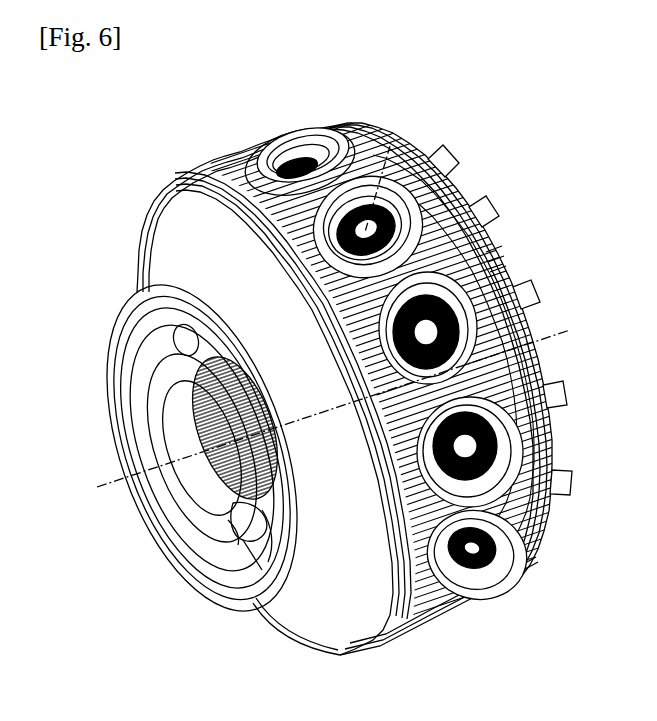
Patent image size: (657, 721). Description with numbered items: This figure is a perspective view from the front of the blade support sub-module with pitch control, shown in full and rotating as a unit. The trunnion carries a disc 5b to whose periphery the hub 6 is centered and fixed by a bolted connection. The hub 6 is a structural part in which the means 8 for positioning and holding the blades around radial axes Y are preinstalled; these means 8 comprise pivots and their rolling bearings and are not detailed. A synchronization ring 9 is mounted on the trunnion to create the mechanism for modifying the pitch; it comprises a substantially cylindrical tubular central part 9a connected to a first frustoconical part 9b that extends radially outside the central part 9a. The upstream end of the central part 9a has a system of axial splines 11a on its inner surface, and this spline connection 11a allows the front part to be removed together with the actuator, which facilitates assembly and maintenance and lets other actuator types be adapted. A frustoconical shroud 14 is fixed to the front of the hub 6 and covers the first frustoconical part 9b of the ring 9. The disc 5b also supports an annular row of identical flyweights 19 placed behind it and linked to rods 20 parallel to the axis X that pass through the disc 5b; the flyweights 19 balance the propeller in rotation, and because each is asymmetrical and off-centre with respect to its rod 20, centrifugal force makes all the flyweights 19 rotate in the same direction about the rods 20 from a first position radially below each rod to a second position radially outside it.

The frustoconical shroud 14 is at (190, 253).
The axial splines 11a is at (217, 421).
The synchronization ring 9 is at (90, 572).
The central part 9a is at (263, 512).
The first frustoconical part 9b is at (230, 525).
The disc 5b is at (440, 200).
The rods 20 is at (489, 213).
The flyweights 19 is at (485, 240).
The hub 6 is at (270, 203).
The means for positioning and holding the blades 8 is at (336, 234).
The axis X is at (100, 488).
The radial axes Y is at (389, 136).